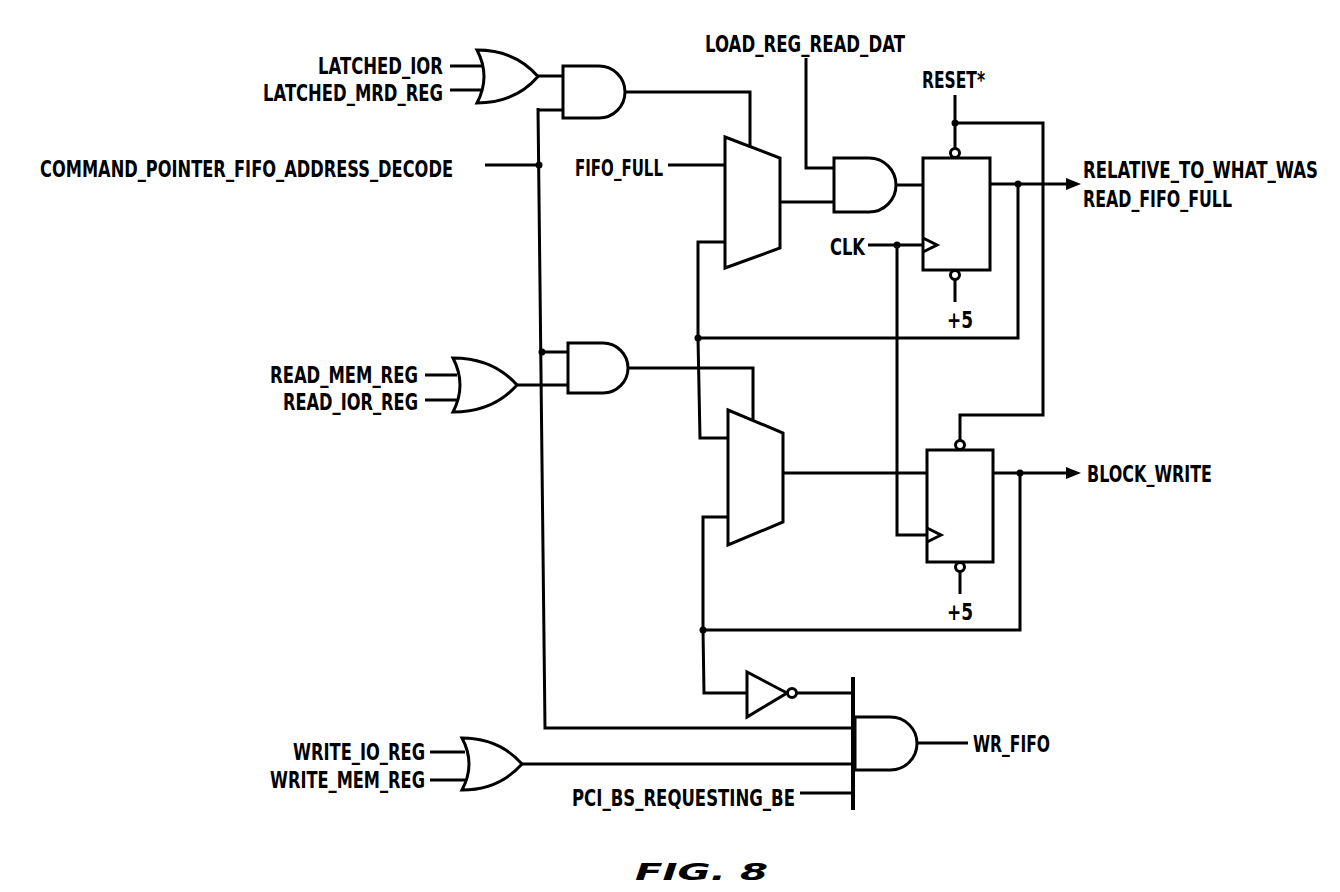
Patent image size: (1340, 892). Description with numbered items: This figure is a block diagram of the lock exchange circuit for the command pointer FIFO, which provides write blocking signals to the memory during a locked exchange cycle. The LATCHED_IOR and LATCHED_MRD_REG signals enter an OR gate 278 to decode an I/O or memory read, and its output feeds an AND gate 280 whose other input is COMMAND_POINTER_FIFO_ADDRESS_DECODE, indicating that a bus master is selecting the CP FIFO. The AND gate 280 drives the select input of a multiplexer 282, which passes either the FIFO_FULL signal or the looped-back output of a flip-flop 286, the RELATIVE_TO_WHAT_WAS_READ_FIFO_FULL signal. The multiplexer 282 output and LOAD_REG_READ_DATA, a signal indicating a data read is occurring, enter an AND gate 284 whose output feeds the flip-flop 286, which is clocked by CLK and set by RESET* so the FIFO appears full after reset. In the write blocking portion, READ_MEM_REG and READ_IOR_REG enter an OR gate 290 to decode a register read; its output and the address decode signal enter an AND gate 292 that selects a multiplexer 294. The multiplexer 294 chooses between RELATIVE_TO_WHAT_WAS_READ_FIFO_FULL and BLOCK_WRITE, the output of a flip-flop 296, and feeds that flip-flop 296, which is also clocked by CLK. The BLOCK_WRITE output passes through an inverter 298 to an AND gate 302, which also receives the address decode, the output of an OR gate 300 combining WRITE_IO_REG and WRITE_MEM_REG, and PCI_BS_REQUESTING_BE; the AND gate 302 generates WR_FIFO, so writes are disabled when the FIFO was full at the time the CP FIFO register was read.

The OR gate 278 is at (495, 50).
The AND gate 280 is at (585, 66).
The multiplexer 282 is at (765, 255).
The AND gate 284 is at (858, 158).
The flip-flop 286 is at (932, 158).
The OR gate 290 is at (470, 412).
The AND gate 292 is at (580, 393).
The multiplexer 294 is at (768, 528).
The flip-flop 296 is at (942, 562).
The inverter 298 is at (758, 672).
The OR gate 300 is at (482, 790).
The AND gate 302 is at (888, 770).